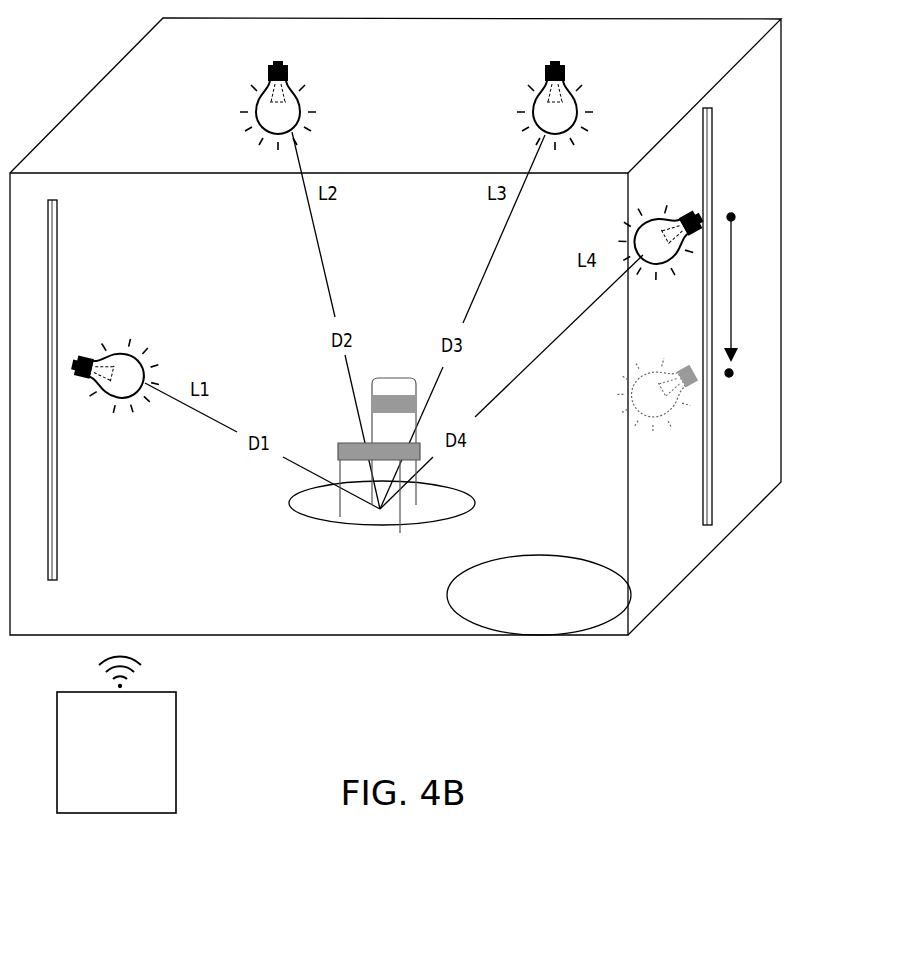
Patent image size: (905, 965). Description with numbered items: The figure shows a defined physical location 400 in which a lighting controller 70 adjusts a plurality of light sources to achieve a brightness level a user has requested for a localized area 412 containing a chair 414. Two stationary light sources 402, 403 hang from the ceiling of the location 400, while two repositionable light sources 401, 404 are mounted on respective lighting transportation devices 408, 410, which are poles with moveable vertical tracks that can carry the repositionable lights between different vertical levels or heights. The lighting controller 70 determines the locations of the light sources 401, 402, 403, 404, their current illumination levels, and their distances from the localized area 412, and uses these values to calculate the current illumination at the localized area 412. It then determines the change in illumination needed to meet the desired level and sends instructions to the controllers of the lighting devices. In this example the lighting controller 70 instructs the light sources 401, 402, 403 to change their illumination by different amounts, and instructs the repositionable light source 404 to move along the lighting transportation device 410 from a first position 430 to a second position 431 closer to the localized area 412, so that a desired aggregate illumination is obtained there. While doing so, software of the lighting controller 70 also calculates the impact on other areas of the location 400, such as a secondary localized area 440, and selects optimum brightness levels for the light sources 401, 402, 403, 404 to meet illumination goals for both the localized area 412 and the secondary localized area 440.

The defined physical location 400 is at (103, 62).
The repositionable light source 401 is at (77, 450).
The stationary light source 402 is at (167, 95).
The stationary light source 403 is at (612, 82).
The repositionable light source 404 is at (642, 324).
The lighting transportation device 408 is at (58, 305).
The lighting transportation device 410 is at (712, 181).
The localized area 412 is at (338, 528).
The chair 414 is at (328, 420).
The first position 430 is at (741, 220).
The second position 431 is at (741, 383).
The secondary localized area 440 is at (590, 558).
The lighting controller 70 is at (116, 734).